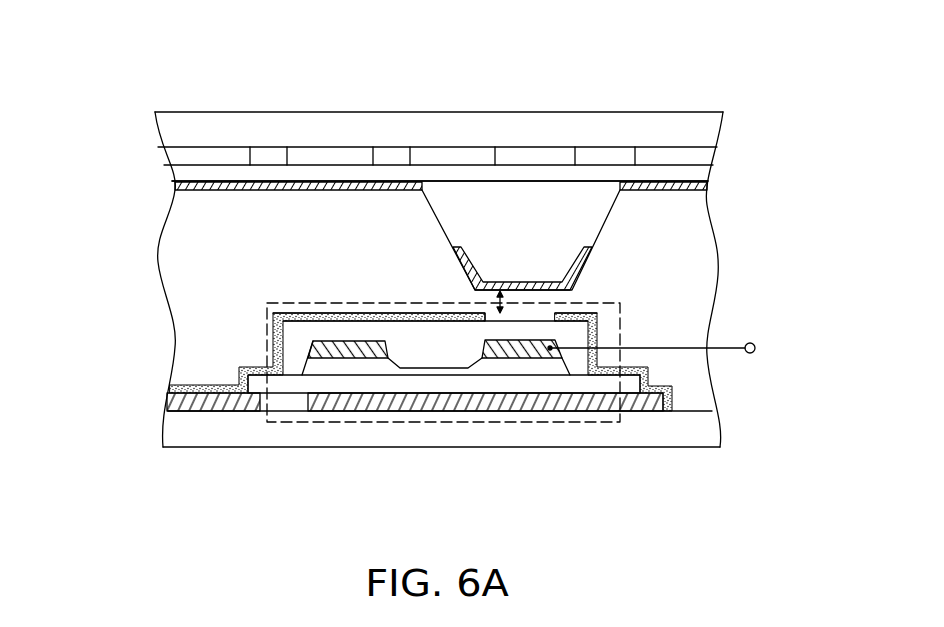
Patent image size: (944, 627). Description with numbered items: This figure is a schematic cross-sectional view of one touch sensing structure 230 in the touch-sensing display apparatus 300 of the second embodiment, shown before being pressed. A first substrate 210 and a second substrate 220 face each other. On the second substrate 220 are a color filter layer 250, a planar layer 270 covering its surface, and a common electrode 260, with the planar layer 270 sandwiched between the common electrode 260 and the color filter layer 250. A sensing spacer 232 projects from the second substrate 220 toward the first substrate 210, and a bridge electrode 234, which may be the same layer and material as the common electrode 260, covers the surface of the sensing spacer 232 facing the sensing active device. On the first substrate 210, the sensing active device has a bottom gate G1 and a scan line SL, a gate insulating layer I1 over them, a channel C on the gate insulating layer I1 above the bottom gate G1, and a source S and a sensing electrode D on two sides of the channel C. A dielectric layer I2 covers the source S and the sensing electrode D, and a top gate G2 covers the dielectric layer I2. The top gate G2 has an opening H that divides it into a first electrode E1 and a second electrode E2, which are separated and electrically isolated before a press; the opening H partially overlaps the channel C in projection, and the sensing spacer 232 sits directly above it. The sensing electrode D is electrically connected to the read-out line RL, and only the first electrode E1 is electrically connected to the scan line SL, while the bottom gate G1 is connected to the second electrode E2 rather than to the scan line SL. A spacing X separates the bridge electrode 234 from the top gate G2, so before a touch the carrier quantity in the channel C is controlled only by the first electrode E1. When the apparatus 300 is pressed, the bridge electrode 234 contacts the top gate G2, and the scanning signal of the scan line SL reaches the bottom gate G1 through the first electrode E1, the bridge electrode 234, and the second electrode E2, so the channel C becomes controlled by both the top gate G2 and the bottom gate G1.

The touch-sensing display apparatus 300 is at (743, 518).
The second substrate 220 is at (808, 112).
The color filter layer 250 is at (717, 156).
The planar layer 270 is at (700, 173).
The common electrode 260 is at (173, 185).
The touch sensing structure 230 is at (68, 205).
The sensing spacer 232 is at (455, 210).
The bridge electrode 234 is at (452, 258).
The top gate G2 is at (458, 44).
The first electrode E1 is at (483, 313).
The second electrode E2 is at (560, 313).
The spacing X is at (503, 293).
The opening H is at (519, 310).
The first substrate 210 is at (808, 312).
The dielectric layer I2 is at (577, 333).
The read-out line RL is at (667, 349).
The gate insulating layer I1 is at (627, 382).
The scan line SL is at (210, 405).
The bottom gate G1 is at (465, 400).
The channel C is at (433, 368).
The source S is at (350, 358).
The sensing electrode D is at (520, 358).